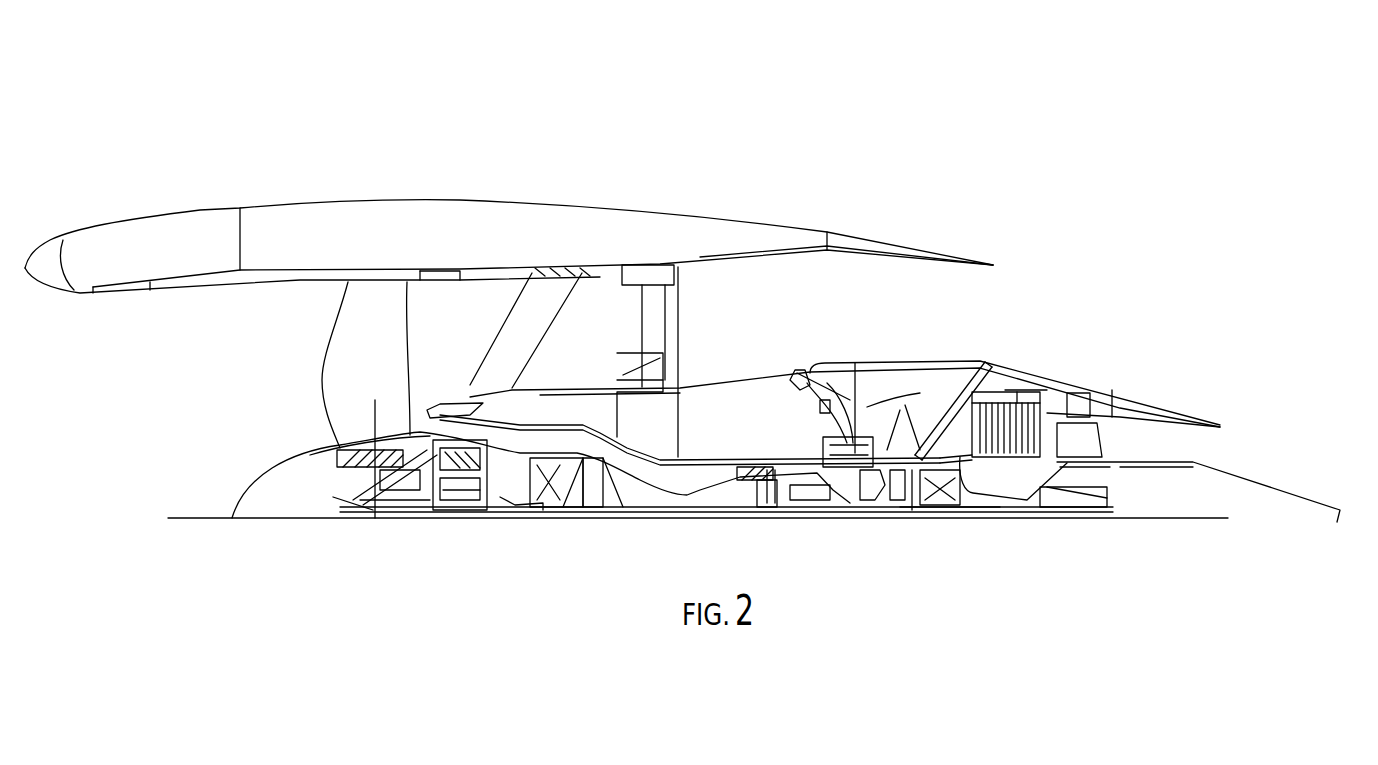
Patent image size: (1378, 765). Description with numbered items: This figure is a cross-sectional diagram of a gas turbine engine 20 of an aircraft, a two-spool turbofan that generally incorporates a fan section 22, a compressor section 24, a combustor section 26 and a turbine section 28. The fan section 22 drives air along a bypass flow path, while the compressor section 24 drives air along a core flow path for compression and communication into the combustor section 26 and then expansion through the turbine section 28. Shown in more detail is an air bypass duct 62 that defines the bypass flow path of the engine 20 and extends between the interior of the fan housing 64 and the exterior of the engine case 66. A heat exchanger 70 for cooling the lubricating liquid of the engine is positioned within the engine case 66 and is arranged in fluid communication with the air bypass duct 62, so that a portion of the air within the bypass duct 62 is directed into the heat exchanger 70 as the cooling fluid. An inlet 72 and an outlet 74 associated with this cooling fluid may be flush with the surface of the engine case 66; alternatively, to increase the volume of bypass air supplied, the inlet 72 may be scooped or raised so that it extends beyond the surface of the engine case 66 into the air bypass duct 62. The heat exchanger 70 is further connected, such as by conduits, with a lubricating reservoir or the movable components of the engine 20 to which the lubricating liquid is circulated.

The gas turbine engine 20 is at (1003, 100).
The fan section 22 is at (375, 131).
The compressor section 24 is at (687, 448).
The combustor section 26 is at (845, 507).
The turbine section 28 is at (1025, 384).
The air bypass duct 62 is at (708, 307).
The fan housing 64 is at (470, 228).
The engine case 66 is at (938, 360).
The heat exchanger 70 is at (928, 518).
The inlet 72 is at (805, 368).
The outlet 74 is at (985, 362).